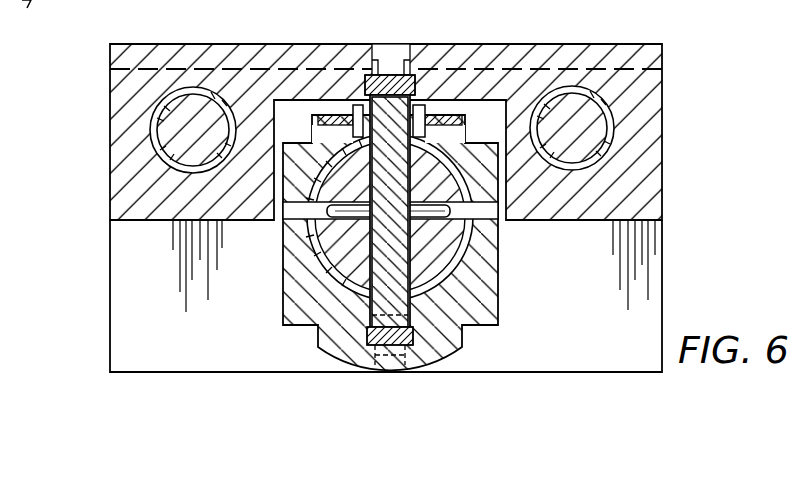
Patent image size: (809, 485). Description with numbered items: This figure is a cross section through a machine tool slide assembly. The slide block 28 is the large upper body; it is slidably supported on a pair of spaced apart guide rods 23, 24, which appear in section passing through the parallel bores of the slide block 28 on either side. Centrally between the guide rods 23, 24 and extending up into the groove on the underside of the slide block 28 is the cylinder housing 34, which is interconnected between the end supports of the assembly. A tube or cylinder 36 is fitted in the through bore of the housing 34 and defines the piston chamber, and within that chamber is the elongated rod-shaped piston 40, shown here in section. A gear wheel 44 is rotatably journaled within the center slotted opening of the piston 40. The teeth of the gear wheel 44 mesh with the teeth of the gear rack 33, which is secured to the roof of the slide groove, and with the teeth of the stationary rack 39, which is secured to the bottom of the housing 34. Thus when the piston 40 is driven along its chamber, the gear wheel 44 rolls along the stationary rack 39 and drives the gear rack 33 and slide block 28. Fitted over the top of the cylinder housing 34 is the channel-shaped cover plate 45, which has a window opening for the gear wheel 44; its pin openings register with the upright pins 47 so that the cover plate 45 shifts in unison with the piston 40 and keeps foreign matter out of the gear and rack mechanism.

The guide rod 23 is at (578, 133).
The guide rod 24 is at (183, 135).
The slide block 28 is at (645, 103).
The gear rack 33 is at (413, 100).
The cylinder housing 34 is at (498, 283).
The cylinder 36 is at (385, 277).
The stationary rack 39 is at (415, 335).
The piston 40 is at (440, 242).
The gear wheel 44 is at (378, 303).
The cover plate 45 is at (450, 112).
The upright pins 47 is at (347, 105).